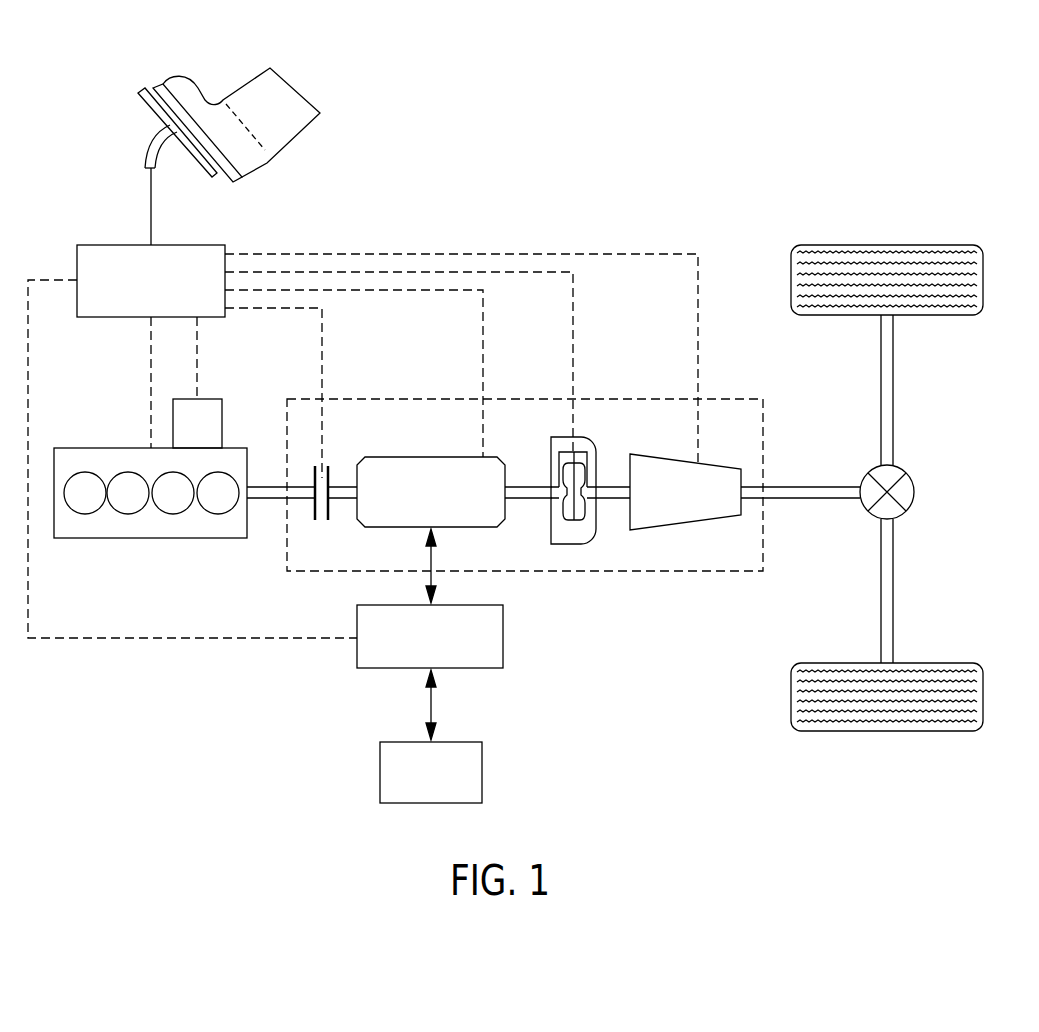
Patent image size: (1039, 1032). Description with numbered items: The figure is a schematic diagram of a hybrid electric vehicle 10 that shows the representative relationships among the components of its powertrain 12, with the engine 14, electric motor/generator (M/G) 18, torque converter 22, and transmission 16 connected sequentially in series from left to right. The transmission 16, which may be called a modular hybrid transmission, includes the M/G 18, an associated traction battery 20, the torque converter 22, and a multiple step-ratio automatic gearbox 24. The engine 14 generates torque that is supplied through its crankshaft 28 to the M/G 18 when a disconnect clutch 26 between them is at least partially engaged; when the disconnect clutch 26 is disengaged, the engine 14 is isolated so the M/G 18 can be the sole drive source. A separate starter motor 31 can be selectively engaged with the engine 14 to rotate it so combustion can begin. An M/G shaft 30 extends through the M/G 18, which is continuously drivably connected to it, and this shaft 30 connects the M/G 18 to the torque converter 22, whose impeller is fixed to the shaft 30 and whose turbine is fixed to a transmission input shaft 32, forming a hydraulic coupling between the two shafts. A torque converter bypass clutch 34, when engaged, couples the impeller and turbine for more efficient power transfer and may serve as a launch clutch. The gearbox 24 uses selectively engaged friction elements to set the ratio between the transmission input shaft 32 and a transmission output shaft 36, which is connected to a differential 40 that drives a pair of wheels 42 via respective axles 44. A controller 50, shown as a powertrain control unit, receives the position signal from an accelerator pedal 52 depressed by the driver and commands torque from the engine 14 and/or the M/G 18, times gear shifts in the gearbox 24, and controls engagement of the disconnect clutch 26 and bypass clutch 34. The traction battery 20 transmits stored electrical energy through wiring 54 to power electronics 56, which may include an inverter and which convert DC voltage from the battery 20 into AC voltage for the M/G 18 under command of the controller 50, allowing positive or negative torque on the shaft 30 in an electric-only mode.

The hybrid electric vehicle 10 is at (692, 149).
The powertrain 12 is at (237, 690).
The engine 14 is at (83, 448).
The transmission 16 is at (540, 395).
The electric motor/generator (M/G) 18 is at (430, 457).
The traction battery 20 is at (380, 773).
The torque converter 22 is at (570, 544).
The gearbox 24 is at (687, 520).
The disconnect clutch 26 is at (330, 510).
The crankshaft 28 is at (278, 484).
The M/G shaft 30 is at (343, 484).
The starter motor 31 is at (210, 399).
The transmission input shaft 32 is at (612, 480).
The torque converter bypass clutch 34 is at (580, 448).
The transmission output shaft 36 is at (827, 485).
The differential 40 is at (915, 490).
The wheels 42 is at (888, 245).
The axles 44 is at (893, 385).
The controller 50 is at (113, 245).
The accelerator pedal 52 is at (160, 118).
The wiring 54 is at (430, 705).
The power electronics 56 is at (503, 638).